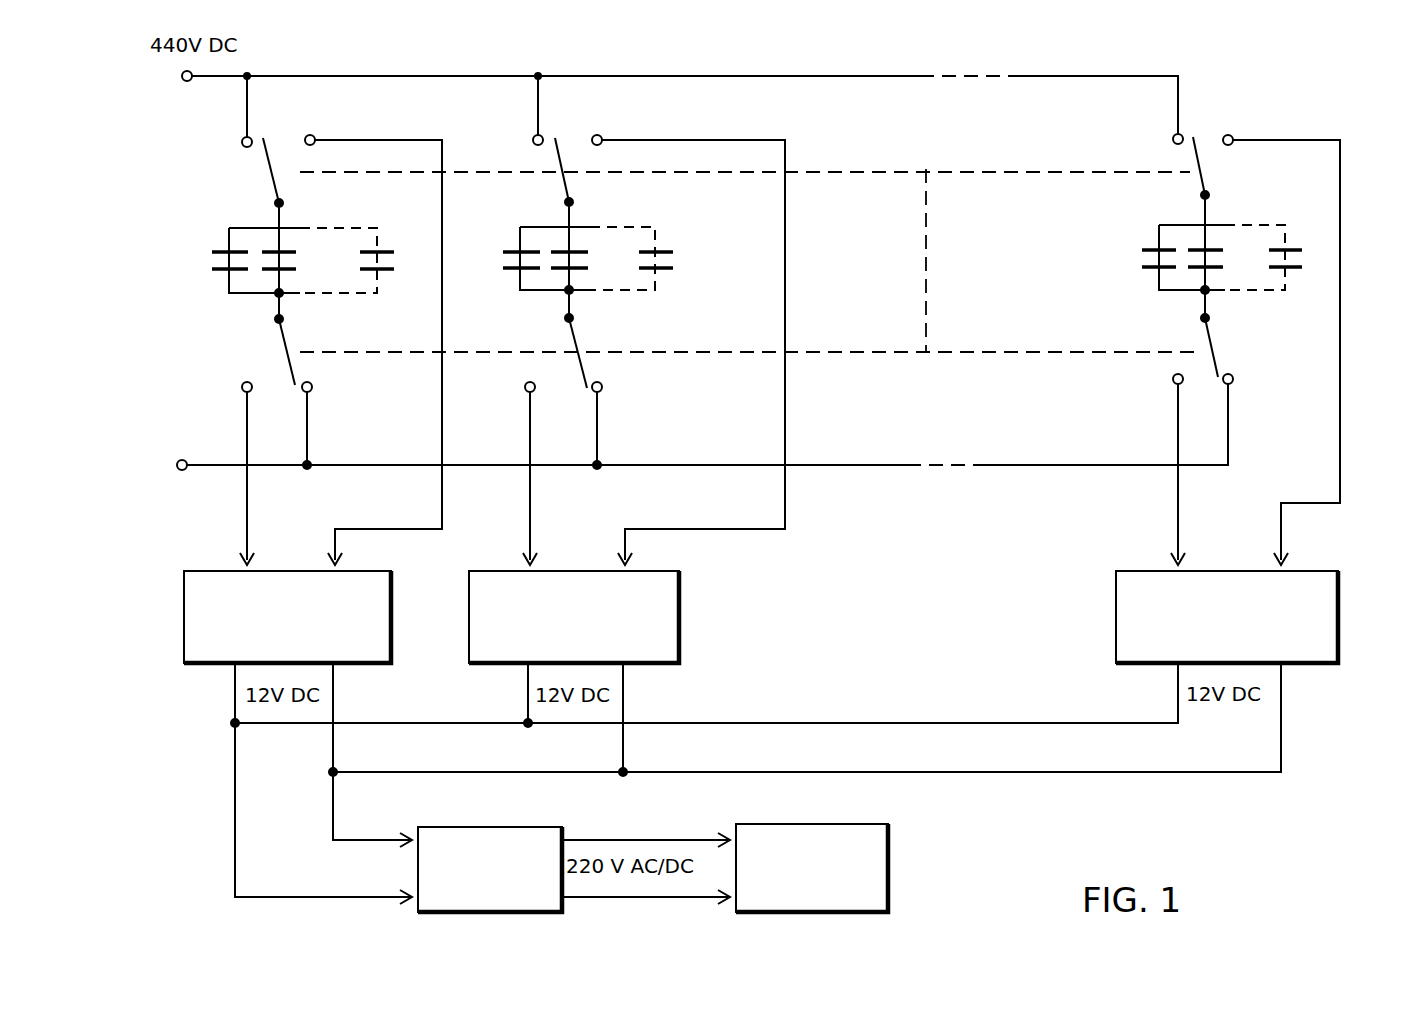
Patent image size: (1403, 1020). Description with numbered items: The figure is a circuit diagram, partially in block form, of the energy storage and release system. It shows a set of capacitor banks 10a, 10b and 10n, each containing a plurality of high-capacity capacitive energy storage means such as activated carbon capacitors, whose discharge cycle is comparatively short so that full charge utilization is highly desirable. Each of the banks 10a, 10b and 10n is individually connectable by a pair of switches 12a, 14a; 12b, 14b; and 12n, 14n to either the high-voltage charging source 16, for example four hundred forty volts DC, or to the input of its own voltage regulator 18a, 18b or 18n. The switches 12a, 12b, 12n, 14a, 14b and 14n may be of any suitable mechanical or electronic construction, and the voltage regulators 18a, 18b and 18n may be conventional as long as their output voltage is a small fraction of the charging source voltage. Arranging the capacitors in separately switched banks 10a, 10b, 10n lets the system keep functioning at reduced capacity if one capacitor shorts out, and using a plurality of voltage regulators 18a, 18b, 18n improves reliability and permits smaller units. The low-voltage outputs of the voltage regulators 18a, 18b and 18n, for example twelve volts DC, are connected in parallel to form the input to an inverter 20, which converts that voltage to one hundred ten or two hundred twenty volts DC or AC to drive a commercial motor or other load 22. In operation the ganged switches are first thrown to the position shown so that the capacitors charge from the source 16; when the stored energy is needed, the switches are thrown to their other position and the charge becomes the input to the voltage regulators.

The charging source 16 is at (187, 82).
The switch 12a is at (268, 160).
The switch 12b is at (558, 146).
The switch 12n is at (1200, 158).
The capacitor bank 10a is at (291, 267).
The capacitor bank 10b is at (604, 243).
The capacitor bank 10n is at (1186, 255).
The switch 14a is at (290, 342).
The switch 14b is at (576, 343).
The switch 14n is at (1212, 343).
The voltage regulator 18a is at (190, 603).
The voltage regulator 18b is at (672, 603).
The voltage regulator 18n is at (1125, 635).
The inverter 20 is at (533, 835).
The load 22 is at (880, 856).